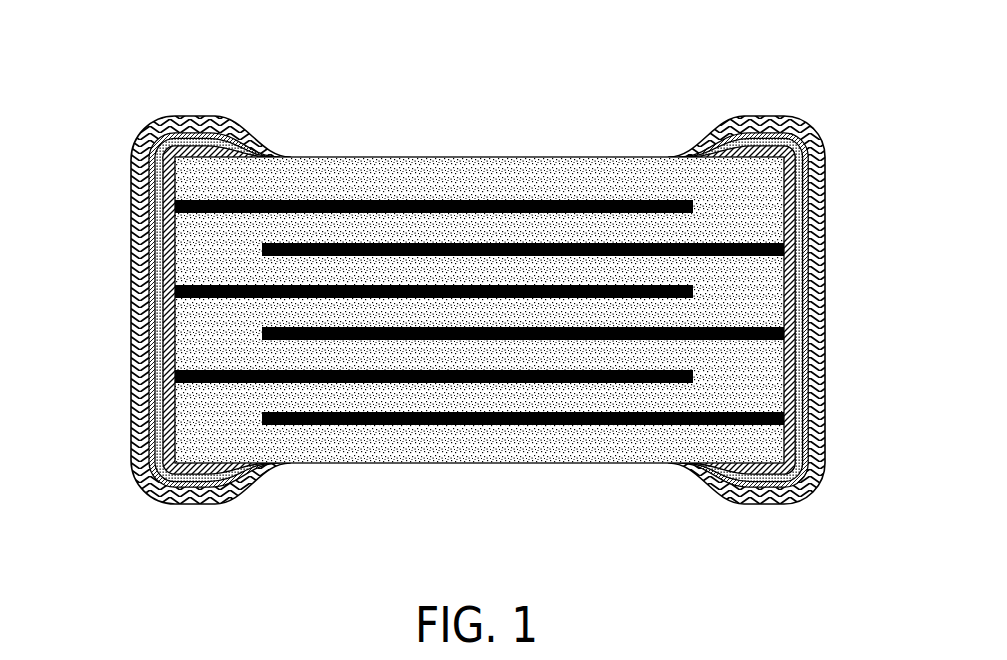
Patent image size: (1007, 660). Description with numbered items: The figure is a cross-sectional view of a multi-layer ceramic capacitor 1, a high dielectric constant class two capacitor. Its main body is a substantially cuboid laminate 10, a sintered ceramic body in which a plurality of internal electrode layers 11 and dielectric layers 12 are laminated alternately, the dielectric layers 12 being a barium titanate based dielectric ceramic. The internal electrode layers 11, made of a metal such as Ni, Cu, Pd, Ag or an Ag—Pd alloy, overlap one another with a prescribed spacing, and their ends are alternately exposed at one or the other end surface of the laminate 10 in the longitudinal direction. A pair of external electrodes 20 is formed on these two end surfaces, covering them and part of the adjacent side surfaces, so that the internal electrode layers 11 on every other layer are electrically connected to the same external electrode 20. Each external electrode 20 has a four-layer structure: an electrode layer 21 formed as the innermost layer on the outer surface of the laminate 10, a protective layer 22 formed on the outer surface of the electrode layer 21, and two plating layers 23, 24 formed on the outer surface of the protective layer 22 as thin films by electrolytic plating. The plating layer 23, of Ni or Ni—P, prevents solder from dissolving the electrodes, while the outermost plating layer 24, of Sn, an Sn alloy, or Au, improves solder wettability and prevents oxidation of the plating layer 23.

The multi-layer ceramic capacitor 1 is at (477, 262).
The laminate 10 is at (470, 157).
The internal electrode layers 11 is at (528, 200).
The dielectric layers 12 is at (582, 230).
The external electrodes 20 is at (477, 262).
The electrode layer 21 is at (132, 213).
The protective layer 22 is at (132, 243).
The plating layer 23 is at (132, 277).
The plating layer 24 is at (132, 312).